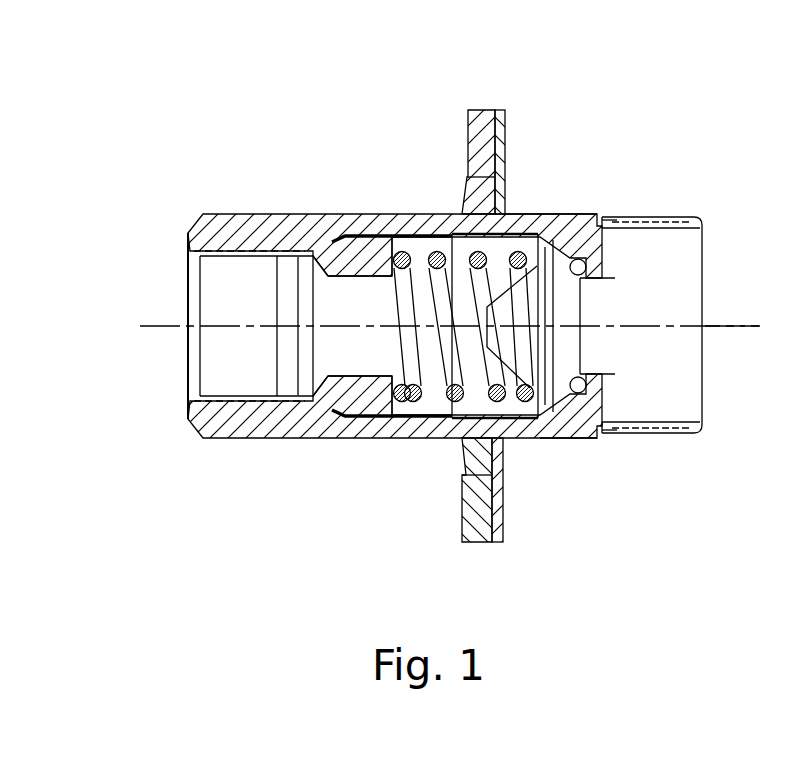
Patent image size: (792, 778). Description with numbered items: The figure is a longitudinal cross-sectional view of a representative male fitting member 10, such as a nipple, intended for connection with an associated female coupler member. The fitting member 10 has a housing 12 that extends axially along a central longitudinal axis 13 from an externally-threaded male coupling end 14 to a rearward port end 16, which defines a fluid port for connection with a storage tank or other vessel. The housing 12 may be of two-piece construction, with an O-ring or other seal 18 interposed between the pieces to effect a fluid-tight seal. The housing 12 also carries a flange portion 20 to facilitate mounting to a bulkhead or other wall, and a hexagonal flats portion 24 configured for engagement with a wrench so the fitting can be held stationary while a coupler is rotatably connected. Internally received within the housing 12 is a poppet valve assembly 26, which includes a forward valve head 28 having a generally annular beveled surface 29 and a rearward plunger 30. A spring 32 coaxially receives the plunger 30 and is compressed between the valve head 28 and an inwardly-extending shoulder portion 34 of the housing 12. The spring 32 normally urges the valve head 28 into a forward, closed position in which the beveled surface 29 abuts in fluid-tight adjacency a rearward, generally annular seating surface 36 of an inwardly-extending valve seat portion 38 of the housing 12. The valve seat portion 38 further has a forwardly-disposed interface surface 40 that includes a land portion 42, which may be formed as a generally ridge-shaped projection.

The male fitting member 10 is at (628, 112).
The housing 12 is at (300, 214).
The central longitudinal axis 13 is at (712, 330).
The externally-threaded male coupling end 14 is at (655, 216).
The rearward port end 16 is at (192, 226).
The O-ring or other seal 18 is at (343, 438).
The flange portion 20 is at (480, 110).
The hexagonal flats portion 24 is at (582, 212).
The poppet valve assembly 26 is at (500, 256).
The forward valve head 28 is at (552, 398).
The beveled surface 29 is at (580, 432).
The rearward plunger 30 is at (513, 372).
The spring 32 is at (414, 403).
The inwardly-extending shoulder portion 34 is at (456, 402).
The seating surface 36 is at (592, 275).
The valve seat portion 38 is at (588, 265).
The interface surface 40 is at (625, 215).
The land portion 42 is at (665, 216).